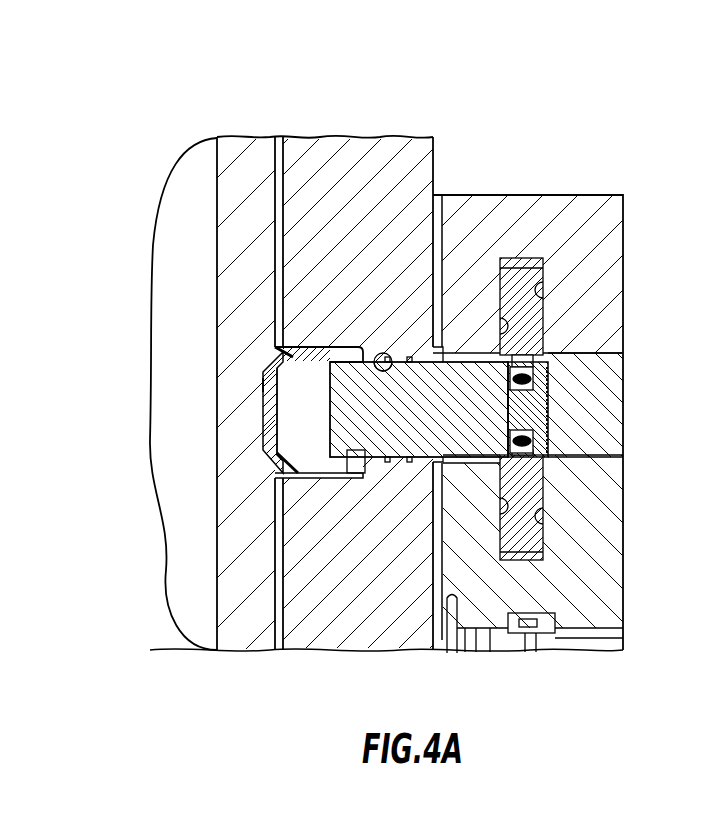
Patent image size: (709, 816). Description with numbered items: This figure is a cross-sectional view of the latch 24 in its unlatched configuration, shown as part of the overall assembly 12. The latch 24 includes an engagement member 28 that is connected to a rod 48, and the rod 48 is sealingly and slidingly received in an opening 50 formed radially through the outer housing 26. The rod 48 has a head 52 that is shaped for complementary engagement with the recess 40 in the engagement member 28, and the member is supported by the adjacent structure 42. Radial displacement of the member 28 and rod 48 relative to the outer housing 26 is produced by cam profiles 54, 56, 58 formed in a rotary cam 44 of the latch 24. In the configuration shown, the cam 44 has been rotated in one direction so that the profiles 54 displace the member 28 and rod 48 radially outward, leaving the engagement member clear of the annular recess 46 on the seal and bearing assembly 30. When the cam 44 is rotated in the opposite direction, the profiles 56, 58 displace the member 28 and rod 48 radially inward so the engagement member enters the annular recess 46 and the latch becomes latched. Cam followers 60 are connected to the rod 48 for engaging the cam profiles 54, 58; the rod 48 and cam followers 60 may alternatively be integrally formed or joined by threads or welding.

The assembly 12 is at (496, 90).
The latch 24 is at (578, 192).
The outer housing 26 is at (337, 137).
The engagement member 28 is at (329, 347).
The seal and bearing assembly 30 is at (255, 137).
The recess 40 is at (330, 418).
The retaining bracket 42 is at (283, 412).
The rotary cam 44 is at (623, 397).
The annular recess 46 is at (266, 392).
The rod 48 is at (402, 462).
The opening 50 is at (392, 360).
The head 52 is at (343, 460).
The cam profile 54 is at (502, 300).
The cam profile 56 is at (545, 403).
The cam profile 58 is at (541, 279).
The cam follower 60 is at (545, 325).